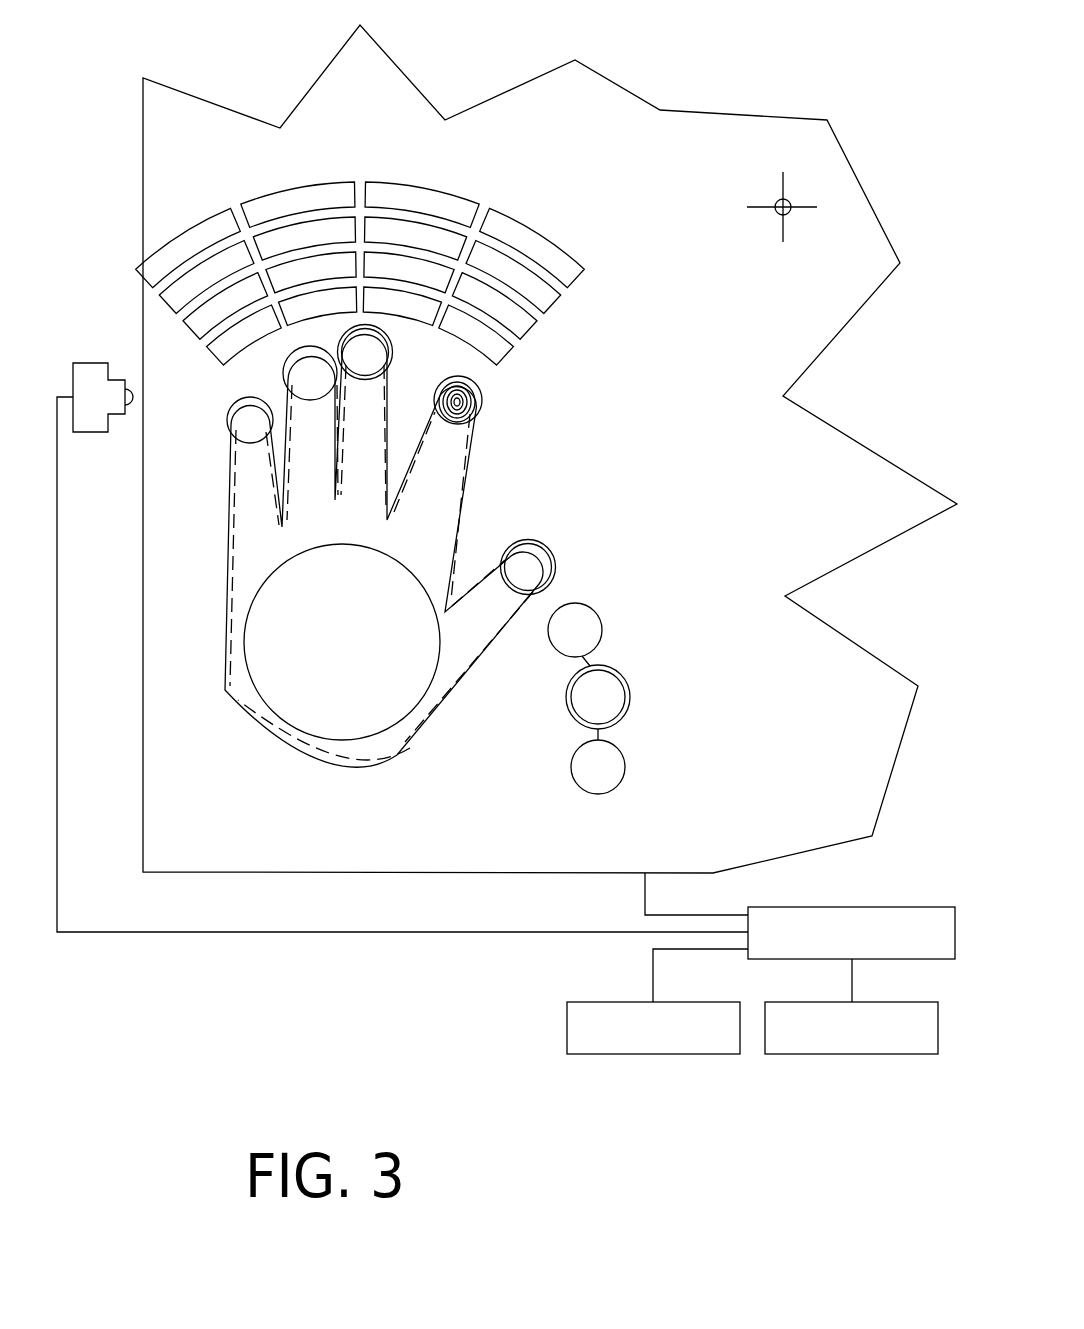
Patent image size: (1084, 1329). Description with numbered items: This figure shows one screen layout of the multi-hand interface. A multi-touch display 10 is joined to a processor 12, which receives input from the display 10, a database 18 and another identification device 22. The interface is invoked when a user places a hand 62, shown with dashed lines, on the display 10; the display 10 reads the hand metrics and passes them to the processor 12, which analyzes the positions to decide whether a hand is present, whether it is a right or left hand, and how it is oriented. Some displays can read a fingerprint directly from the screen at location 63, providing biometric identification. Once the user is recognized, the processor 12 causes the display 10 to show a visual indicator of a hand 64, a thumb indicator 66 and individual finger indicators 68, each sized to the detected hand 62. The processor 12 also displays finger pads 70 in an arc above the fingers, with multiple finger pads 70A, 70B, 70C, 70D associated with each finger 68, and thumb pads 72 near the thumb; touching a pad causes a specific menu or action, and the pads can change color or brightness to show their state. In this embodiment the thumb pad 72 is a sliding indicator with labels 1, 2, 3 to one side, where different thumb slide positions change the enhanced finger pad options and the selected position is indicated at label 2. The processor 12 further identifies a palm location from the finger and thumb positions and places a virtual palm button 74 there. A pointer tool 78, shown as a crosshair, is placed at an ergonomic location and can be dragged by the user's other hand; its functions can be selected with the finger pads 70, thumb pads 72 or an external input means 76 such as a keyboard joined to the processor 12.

The multi-touch display 10 is at (350, 872).
The processor 12 is at (863, 907).
The database 18 is at (853, 1054).
The other identification device 22 is at (98, 362).
The hand 62 is at (463, 700).
The fingerprint location 63 is at (481, 405).
The visual indicator of a hand 64 is at (288, 750).
The thumb indicator 66 is at (556, 557).
The individual finger indicators 68 is at (385, 362).
The finger pads 70 is at (407, 263).
The finger pad 70A is at (577, 273).
The finger pad 70B is at (552, 303).
The finger pad 70C is at (530, 333).
The finger pad 70D is at (510, 357).
The thumb pad 72 is at (633, 719).
The virtual palm button 74 is at (253, 690).
The input means 76 is at (567, 1027).
The pointer tool 78 is at (777, 213).
The thumb slide position label 1 is at (585, 626).
The thumb slide position label 2 is at (609, 697).
The thumb slide position label 3 is at (612, 767).